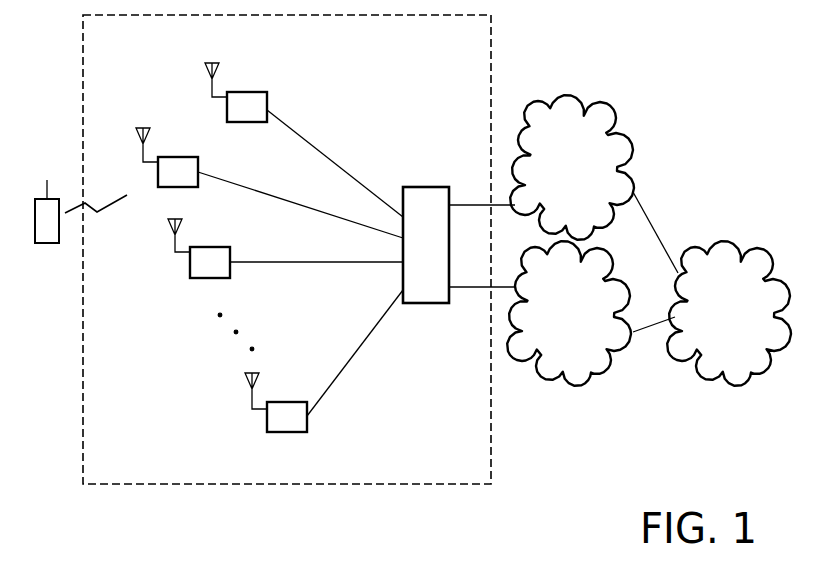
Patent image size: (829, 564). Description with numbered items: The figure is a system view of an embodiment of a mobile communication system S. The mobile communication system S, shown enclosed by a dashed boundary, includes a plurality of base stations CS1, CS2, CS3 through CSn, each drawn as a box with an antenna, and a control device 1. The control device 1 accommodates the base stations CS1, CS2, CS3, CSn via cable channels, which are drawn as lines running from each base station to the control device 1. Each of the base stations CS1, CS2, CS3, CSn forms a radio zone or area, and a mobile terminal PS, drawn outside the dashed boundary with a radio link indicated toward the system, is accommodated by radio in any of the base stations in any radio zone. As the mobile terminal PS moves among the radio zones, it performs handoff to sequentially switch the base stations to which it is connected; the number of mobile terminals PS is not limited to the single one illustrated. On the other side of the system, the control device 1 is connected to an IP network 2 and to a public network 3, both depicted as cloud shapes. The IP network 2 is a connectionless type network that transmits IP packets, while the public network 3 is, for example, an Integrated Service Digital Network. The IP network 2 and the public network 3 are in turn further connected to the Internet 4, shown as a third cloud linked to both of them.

The control device 1 is at (431, 187).
The IP network 2 is at (566, 97).
The public network 3 is at (577, 387).
The Internet 4 is at (737, 387).
The mobile communication system S is at (83, 424).
The mobile terminal PS is at (43, 243).
The base station CS1 is at (257, 92).
The base station CS2 is at (180, 157).
The base station CS3 is at (190, 268).
The base station CSn is at (267, 427).